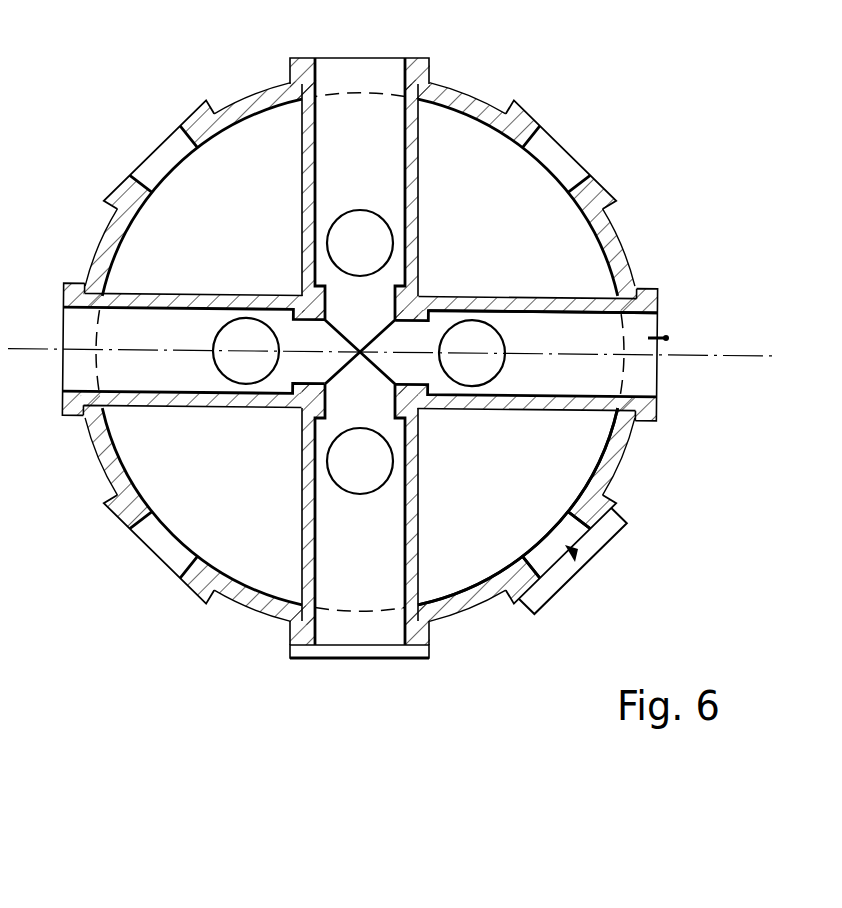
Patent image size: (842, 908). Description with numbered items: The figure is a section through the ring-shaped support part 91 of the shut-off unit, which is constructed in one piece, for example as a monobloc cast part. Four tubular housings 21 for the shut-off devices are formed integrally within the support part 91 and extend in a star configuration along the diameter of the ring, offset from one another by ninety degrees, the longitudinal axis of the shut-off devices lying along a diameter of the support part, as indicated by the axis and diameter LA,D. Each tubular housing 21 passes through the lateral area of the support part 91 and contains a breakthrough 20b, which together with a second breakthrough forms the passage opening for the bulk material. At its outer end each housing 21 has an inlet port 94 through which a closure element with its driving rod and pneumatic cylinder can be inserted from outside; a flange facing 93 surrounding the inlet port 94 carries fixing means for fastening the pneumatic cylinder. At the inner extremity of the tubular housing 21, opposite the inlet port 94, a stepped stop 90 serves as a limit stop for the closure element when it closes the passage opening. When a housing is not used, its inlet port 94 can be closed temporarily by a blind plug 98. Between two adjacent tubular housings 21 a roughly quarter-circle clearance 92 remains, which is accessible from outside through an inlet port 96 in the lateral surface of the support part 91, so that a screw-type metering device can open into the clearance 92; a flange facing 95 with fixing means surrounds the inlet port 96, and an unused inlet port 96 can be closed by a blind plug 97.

The support part 91 is at (473, 96).
The stepped stop 90 is at (453, 311).
The breakthrough 20b is at (486, 322).
The tubular housing 21 is at (545, 297).
The flange facing 93 is at (655, 295).
The inlet port 94 is at (668, 338).
The longitudinal axis and diameter LA,D is at (735, 362).
The clearance 92 is at (507, 483).
The flange facing 95 is at (612, 496).
The inlet port 96 is at (578, 565).
The blind plug 97 is at (597, 542).
The blind plug 98 is at (373, 650).